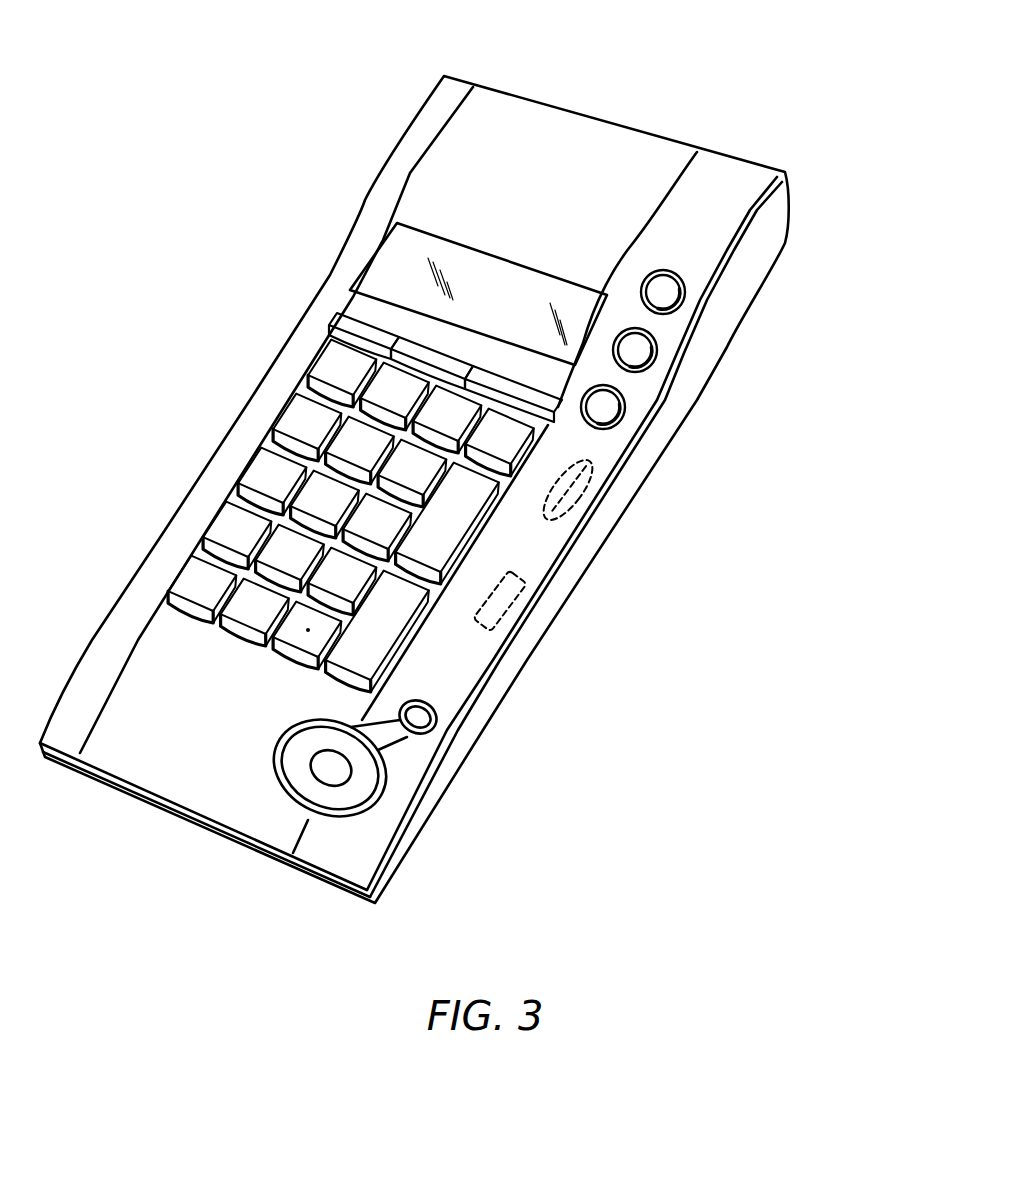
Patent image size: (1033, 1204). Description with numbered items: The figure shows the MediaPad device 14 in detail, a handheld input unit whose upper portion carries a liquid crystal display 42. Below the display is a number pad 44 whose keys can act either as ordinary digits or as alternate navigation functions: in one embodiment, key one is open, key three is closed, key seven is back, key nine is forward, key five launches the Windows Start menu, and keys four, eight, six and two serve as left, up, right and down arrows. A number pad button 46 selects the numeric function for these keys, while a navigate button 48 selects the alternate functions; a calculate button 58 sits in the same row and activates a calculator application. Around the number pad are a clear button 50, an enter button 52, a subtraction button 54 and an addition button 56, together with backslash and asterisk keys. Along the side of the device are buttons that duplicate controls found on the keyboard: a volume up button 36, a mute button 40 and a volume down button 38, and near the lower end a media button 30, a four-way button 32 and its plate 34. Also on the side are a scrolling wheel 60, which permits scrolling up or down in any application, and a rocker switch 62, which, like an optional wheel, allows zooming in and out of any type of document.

The MediaPad device 14 is at (460, 83).
The media button 30 is at (423, 718).
The four-way button 32 is at (347, 787).
The plate 34 is at (390, 738).
The volume up button 36 is at (670, 290).
The volume down button 38 is at (613, 408).
The mute button 40 is at (643, 352).
The liquid crystal display 42 is at (440, 247).
The number pad 44 is at (376, 526).
The number pad button 46 is at (340, 318).
The navigate button 48 is at (437, 353).
The clear button 50 is at (337, 372).
The enter button 52 is at (360, 660).
The subtraction button 54 is at (522, 443).
The addition button 56 is at (483, 517).
The calculate button 58 is at (530, 392).
The scrolling wheel 60 is at (572, 487).
The rocker switch 62 is at (510, 600).